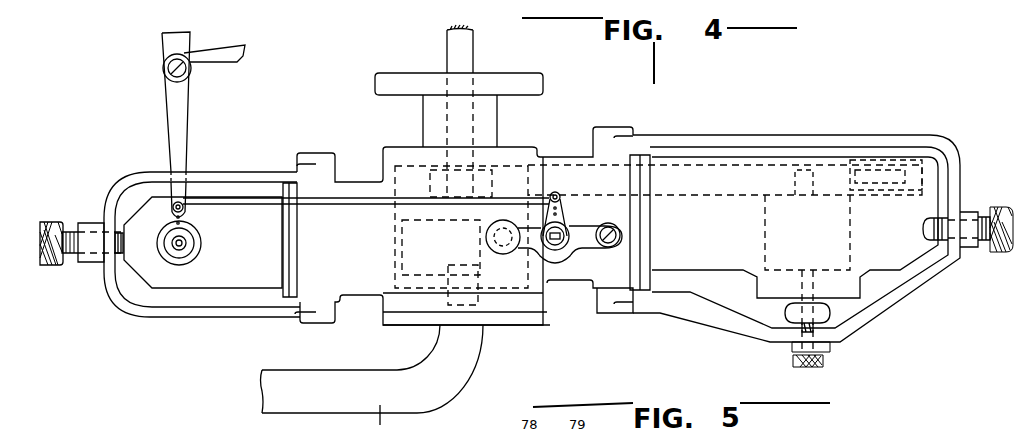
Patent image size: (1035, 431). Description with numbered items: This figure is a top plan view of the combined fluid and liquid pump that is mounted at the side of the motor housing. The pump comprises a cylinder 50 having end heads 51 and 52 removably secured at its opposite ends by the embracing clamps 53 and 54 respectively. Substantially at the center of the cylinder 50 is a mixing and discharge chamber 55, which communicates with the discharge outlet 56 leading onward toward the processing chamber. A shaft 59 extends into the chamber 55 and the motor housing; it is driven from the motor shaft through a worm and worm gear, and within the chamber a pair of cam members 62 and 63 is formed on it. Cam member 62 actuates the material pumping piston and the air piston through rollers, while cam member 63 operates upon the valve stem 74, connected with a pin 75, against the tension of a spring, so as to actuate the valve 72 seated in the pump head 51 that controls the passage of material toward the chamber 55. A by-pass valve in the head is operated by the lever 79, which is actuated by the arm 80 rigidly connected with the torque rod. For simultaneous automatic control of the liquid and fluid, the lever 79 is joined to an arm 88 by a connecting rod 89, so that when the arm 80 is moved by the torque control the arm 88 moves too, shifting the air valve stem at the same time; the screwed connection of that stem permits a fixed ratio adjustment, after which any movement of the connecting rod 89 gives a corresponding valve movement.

The cylinder 50 is at (375, 275).
The end head 51 is at (895, 258).
The end head 52 is at (243, 283).
The embracing clamp 53 is at (955, 258).
The embracing clamp 54 is at (144, 312).
The mixing and discharge chamber 55 is at (507, 280).
The discharge outlet 56 is at (417, 293).
The shaft 59 is at (476, 67).
The cam member 62 is at (412, 220).
The cam member 63 is at (487, 182).
The valve 72 is at (833, 205).
The valve stem 74 is at (750, 172).
The pin 75 is at (813, 177).
The lever 79 is at (565, 212).
The arm 80 is at (172, 95).
The arm 88 is at (187, 213).
The connecting rod 89 is at (323, 205).